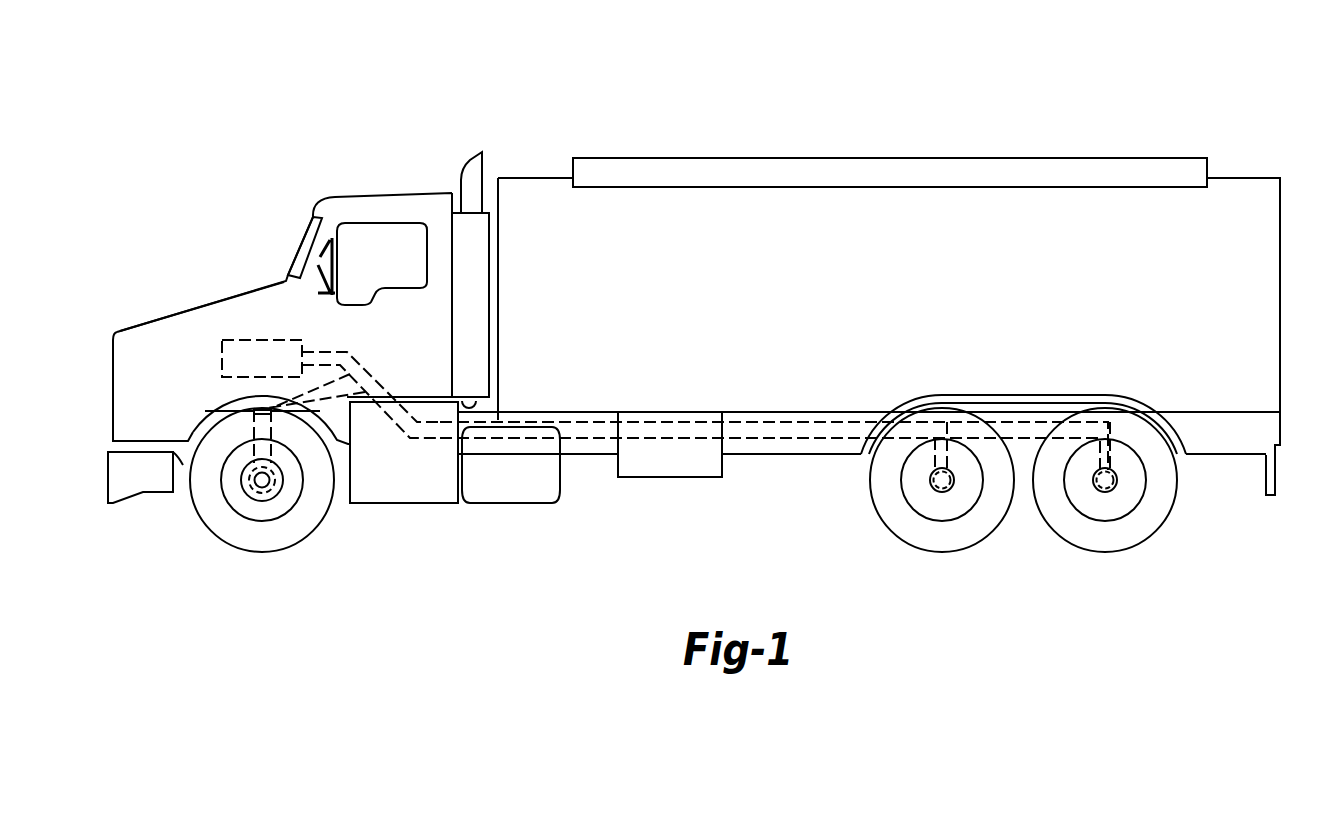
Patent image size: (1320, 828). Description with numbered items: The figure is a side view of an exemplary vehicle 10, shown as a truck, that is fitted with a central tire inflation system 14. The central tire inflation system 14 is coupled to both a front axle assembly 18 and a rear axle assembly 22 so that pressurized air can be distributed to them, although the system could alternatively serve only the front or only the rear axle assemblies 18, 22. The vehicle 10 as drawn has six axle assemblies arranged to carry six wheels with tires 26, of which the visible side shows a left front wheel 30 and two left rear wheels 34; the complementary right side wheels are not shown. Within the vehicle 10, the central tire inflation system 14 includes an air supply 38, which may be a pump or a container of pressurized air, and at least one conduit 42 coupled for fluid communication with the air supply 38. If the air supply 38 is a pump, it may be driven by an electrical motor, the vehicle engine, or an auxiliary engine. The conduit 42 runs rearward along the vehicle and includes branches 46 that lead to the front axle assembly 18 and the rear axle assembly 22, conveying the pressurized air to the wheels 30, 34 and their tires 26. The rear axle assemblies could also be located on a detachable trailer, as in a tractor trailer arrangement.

The vehicle 10 is at (276, 121).
The central tire inflation system 14 is at (199, 333).
The air supply 38 is at (222, 358).
The conduit 42 is at (433, 438).
The branches 46 is at (257, 420).
The tires 26 is at (313, 535).
The left front wheel 30 is at (275, 503).
The front axle assembly 18 is at (252, 481).
The left rear wheels 34 is at (940, 523).
The rear axle assembly 22 is at (955, 484).